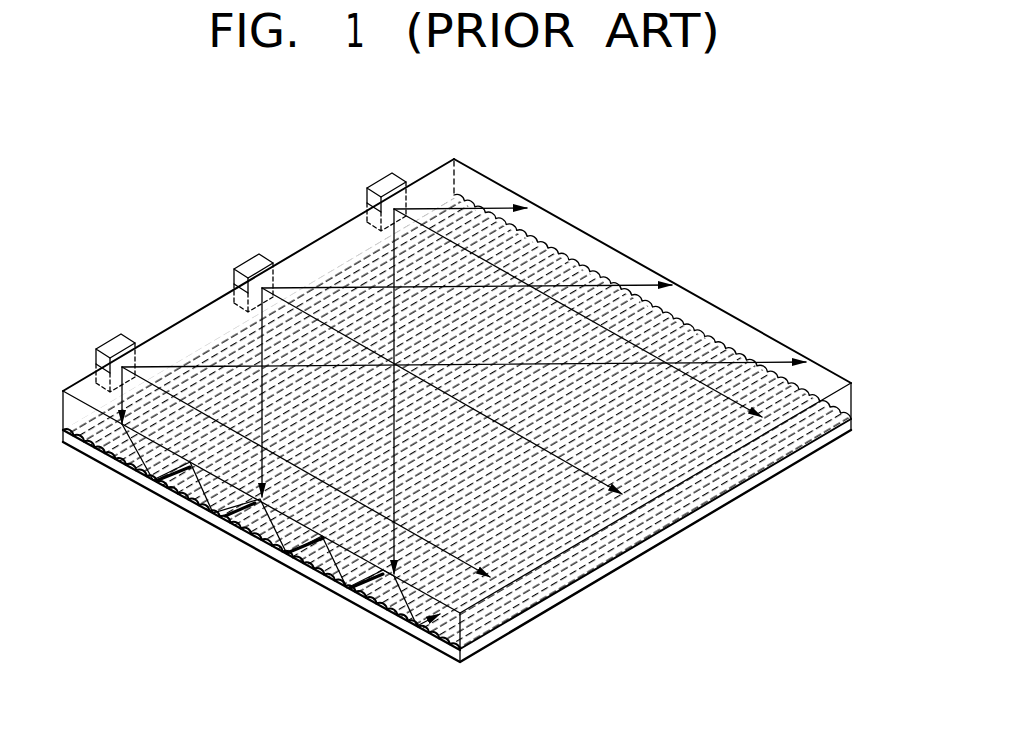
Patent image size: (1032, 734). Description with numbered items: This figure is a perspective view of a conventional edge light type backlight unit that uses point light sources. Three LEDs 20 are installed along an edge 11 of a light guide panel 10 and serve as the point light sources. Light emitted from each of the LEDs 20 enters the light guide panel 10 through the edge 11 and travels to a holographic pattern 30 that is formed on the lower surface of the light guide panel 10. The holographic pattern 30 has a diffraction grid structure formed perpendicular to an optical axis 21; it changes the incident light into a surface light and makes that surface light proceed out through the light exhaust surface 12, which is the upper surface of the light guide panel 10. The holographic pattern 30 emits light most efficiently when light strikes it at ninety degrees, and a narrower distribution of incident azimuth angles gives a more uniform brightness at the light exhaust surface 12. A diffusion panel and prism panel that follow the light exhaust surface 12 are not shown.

The light guide panel 10 is at (762, 329).
The edge 11 is at (430, 176).
The light exhaust surface 12 is at (698, 315).
The LEDs 20 is at (130, 337).
The optical axis 21 is at (587, 467).
The holographic pattern 30 is at (247, 536).